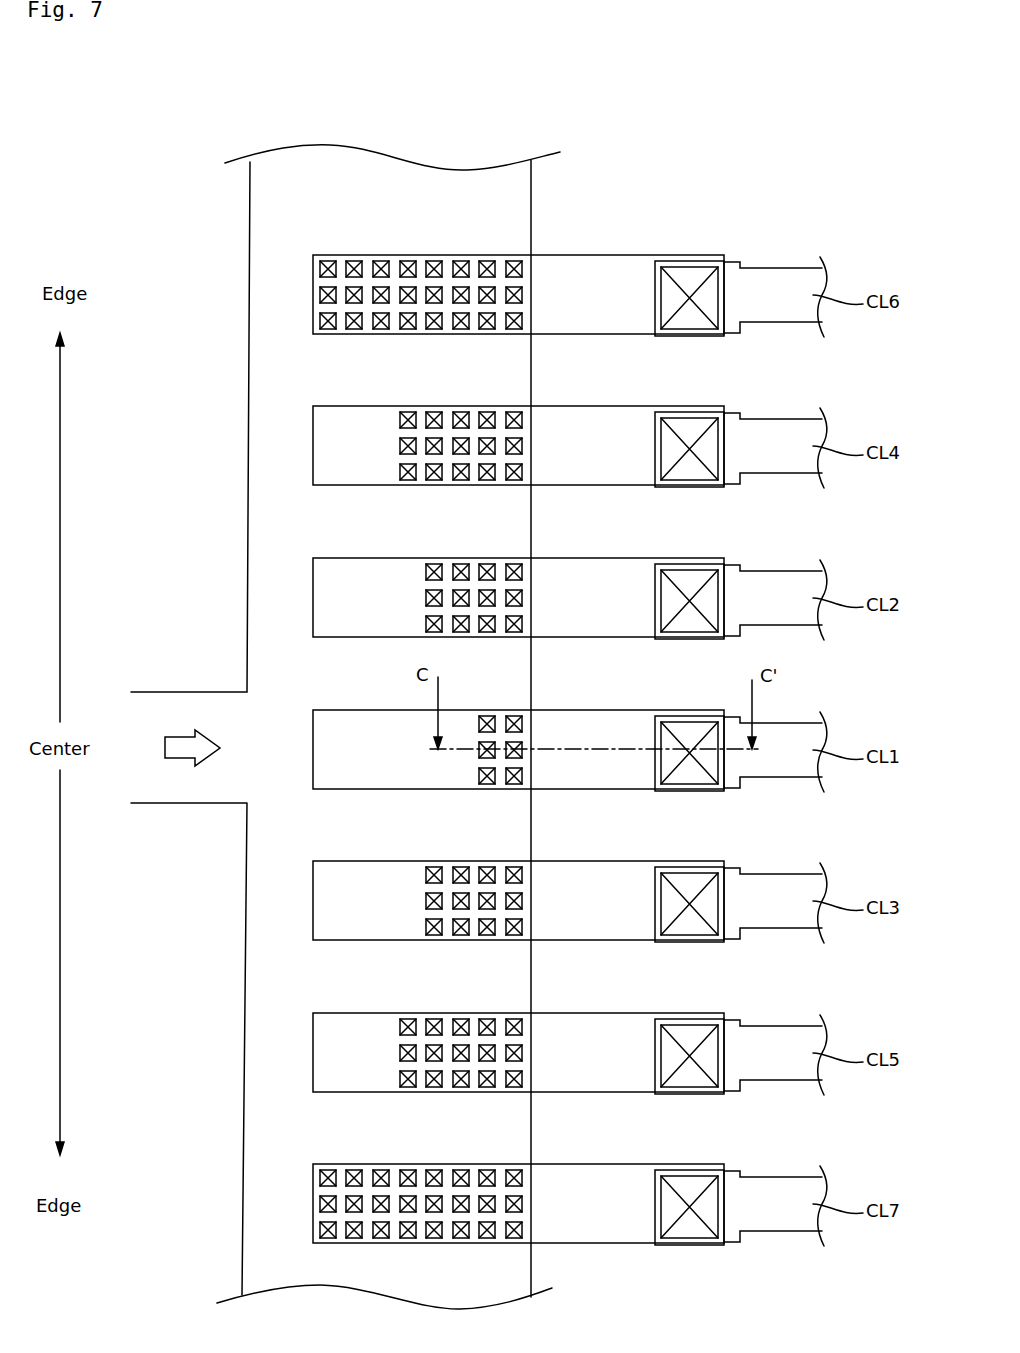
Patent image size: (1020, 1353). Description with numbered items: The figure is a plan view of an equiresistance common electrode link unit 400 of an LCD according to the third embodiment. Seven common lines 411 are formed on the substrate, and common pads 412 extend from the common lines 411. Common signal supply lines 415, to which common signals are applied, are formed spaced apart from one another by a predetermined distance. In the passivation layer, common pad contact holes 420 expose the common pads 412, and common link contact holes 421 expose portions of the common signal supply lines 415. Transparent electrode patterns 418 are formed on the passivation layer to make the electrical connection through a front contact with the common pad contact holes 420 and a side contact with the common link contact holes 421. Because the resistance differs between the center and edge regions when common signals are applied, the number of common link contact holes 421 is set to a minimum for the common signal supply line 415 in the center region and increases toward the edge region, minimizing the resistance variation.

The equiresistance common electrode link unit 400 is at (661, 153).
The common lines 411 is at (775, 280).
The common pads 412 is at (692, 262).
The common signal supply lines 415 is at (247, 490).
The transparent electrode patterns 418 is at (607, 255).
The common pad contact holes 420 is at (672, 291).
The common link contact holes 421 is at (410, 258).